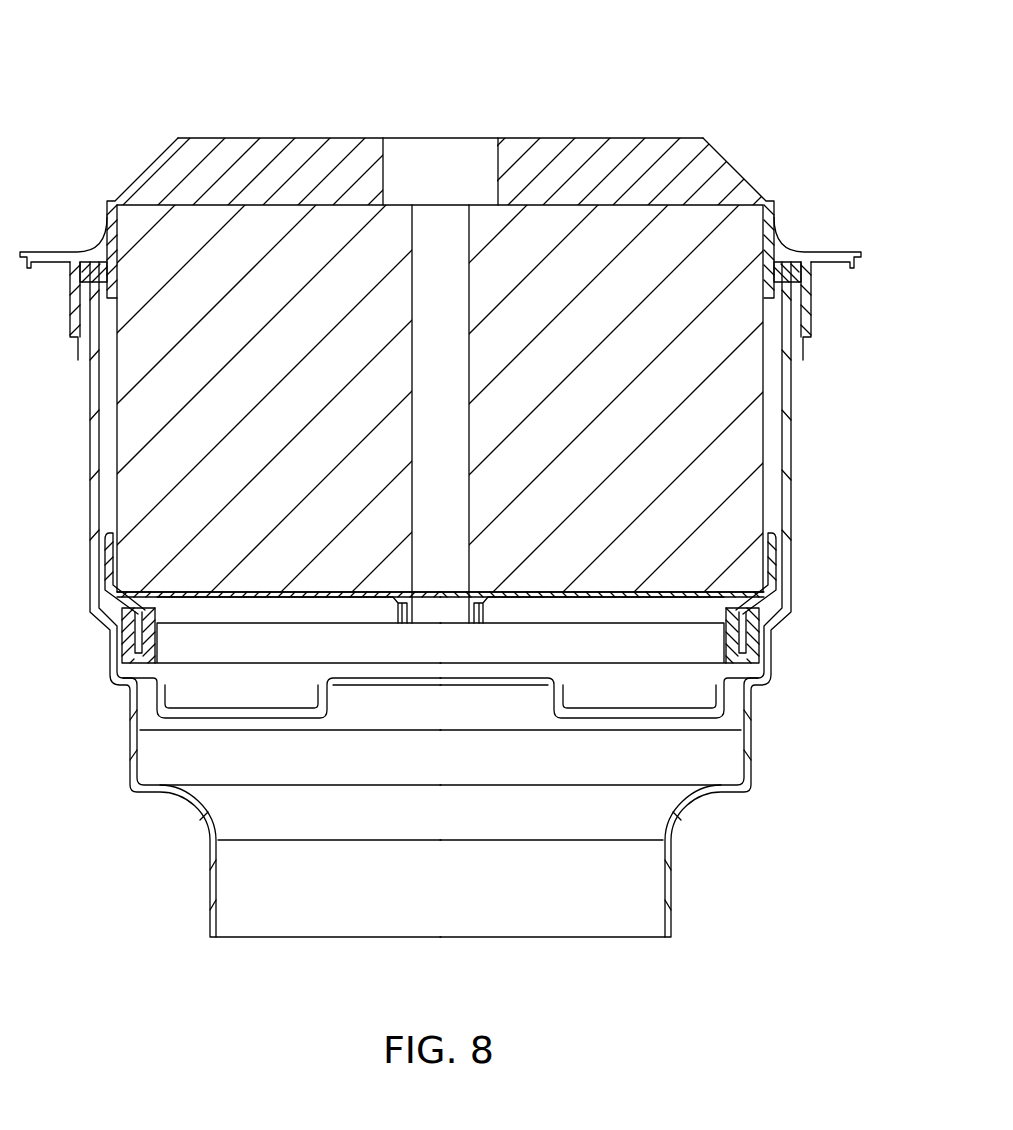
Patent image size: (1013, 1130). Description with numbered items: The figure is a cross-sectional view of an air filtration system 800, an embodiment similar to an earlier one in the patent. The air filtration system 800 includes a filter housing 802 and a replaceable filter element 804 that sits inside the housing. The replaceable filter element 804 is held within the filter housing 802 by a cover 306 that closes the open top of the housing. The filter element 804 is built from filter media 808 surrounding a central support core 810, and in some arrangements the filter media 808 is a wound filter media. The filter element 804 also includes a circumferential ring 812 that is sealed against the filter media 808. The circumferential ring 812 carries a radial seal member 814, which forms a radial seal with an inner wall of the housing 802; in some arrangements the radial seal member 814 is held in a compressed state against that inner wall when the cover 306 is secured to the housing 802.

The air filtration system 800 is at (153, 64).
The cover 306 is at (614, 158).
The filter housing 802 is at (790, 480).
The replaceable filter element 804 is at (770, 402).
The filter media 808 is at (655, 425).
The central support core 810 is at (440, 395).
The circumferential ring 812 is at (110, 562).
The radial seal member 814 is at (126, 650).